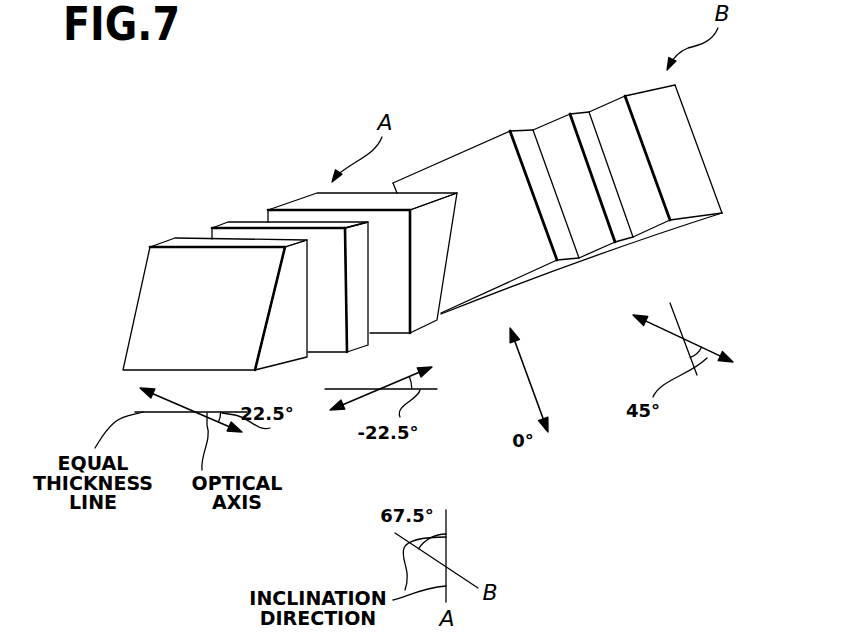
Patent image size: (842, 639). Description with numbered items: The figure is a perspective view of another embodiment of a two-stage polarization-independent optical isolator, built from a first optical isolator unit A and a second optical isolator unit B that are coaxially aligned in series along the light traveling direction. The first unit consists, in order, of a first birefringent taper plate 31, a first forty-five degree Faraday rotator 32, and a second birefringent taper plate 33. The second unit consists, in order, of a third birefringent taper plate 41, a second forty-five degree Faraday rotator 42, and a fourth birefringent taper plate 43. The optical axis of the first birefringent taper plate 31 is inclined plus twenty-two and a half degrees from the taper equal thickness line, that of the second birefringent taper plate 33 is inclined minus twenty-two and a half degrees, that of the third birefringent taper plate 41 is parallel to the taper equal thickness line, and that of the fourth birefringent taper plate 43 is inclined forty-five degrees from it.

The first birefringent taper plate 31 is at (150, 290).
The first 45° Faraday rotator 32 is at (242, 220).
The second birefringent taper plate 33 is at (315, 200).
The third birefringent taper plate 41 is at (492, 150).
The second 45° Faraday rotator 42 is at (553, 126).
The fourth birefringent taper plate 43 is at (615, 108).